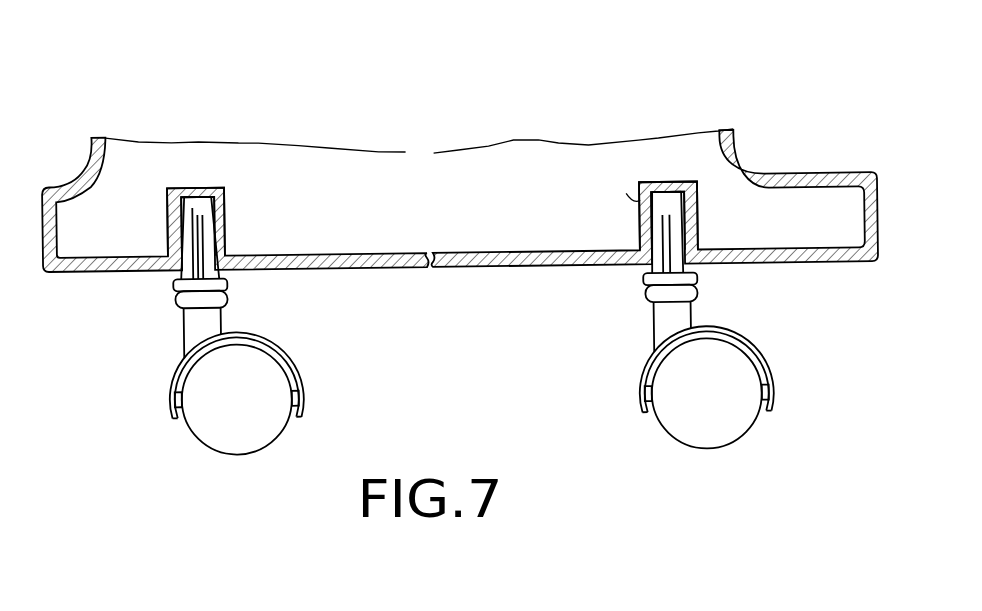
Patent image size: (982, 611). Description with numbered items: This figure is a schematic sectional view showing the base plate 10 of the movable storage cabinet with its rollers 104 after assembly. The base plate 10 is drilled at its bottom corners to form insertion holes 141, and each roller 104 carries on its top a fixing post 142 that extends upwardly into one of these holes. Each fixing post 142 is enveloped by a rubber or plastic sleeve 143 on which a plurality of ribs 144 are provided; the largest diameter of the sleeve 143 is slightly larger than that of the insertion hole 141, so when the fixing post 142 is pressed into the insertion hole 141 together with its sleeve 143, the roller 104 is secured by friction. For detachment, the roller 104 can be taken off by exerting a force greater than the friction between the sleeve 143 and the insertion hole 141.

The base plate 10 is at (82, 166).
The insertion hole 141 is at (459, 165).
The sleeve 143 is at (202, 200).
The rib 144 is at (690, 270).
The fixing post 142 is at (655, 325).
The roller 104 is at (202, 419).